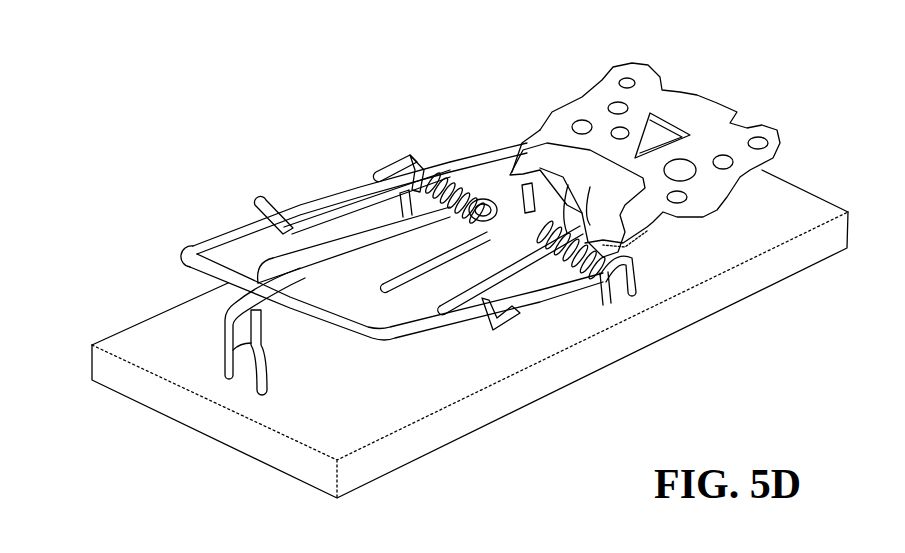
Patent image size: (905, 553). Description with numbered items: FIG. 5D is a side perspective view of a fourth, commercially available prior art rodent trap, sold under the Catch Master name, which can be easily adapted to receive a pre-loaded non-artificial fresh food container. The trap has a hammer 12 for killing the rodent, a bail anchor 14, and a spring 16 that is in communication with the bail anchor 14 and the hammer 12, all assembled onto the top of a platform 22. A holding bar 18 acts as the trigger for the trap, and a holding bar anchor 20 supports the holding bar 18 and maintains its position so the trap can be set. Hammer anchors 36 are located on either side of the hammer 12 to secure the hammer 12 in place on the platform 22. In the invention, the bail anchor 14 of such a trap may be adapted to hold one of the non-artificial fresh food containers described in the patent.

The hammer 12 is at (203, 242).
The bail anchor 14 is at (652, 112).
The spring 16 is at (462, 177).
The holding bar 18 is at (363, 249).
The holding bar anchor 20 is at (258, 384).
The platform 22 is at (167, 353).
The hammer anchors 36 is at (640, 273).